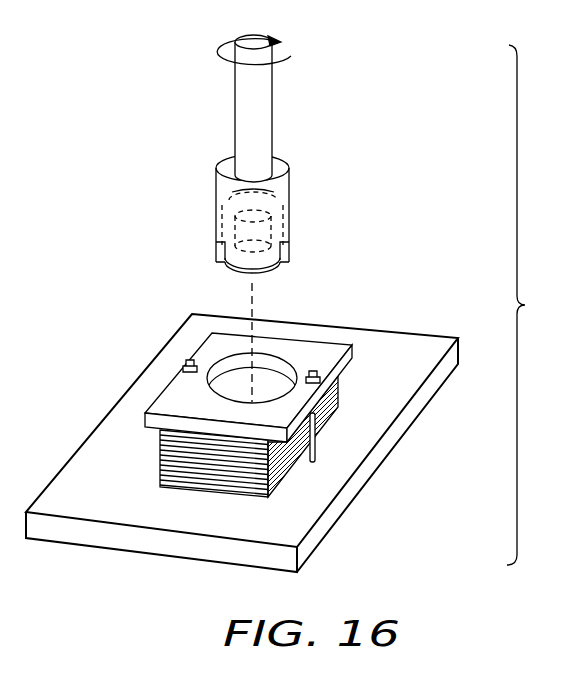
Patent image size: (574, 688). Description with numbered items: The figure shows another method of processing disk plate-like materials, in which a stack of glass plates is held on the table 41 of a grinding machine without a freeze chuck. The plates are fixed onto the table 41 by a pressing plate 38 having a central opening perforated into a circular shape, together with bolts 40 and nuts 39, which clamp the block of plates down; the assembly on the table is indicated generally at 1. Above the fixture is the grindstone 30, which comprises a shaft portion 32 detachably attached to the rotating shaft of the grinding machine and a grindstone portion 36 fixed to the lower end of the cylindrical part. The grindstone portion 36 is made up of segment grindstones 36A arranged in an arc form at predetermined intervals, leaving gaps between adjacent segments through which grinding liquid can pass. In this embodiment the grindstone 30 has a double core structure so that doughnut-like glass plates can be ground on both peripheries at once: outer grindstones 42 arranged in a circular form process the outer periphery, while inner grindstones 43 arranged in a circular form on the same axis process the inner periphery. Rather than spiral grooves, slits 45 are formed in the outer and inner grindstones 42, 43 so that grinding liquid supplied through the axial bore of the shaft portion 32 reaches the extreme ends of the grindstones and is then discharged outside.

The lamination stack / core assembly 1 is at (350, 388).
The grindstone 30 is at (299, 183).
The shaft portion 32 is at (284, 100).
The grindstone portion 36 is at (231, 273).
The segment grindstones 36A is at (219, 263).
The pressing plate 38 is at (340, 342).
The nuts 39 is at (185, 365).
The bolts 40 is at (316, 447).
The table 41 is at (345, 513).
The outer grindstones 42 is at (290, 217).
The inner grindstones 43 is at (215, 194).
The slits 45 is at (221, 242).